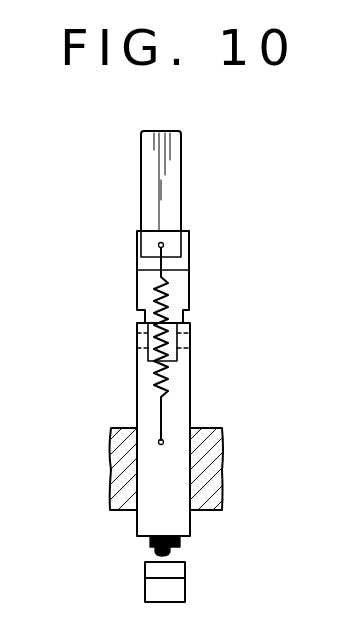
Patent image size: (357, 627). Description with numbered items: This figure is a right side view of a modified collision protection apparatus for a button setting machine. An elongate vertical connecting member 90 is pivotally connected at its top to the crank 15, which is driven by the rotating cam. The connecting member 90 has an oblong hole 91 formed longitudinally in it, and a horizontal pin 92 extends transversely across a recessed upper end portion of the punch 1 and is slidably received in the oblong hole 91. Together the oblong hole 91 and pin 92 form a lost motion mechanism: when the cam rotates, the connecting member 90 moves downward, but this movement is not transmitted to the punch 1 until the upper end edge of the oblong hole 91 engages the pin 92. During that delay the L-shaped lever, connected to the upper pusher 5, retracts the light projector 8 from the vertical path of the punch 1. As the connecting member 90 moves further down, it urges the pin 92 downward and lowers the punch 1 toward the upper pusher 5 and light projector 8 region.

The crank 15 is at (181, 177).
The connecting member 90 is at (180, 285).
The oblong hole 91 is at (190, 326).
The pin 92 is at (190, 340).
The punch 1 is at (183, 520).
The upper pusher 5 is at (178, 570).
The light projector 8 is at (145, 591).